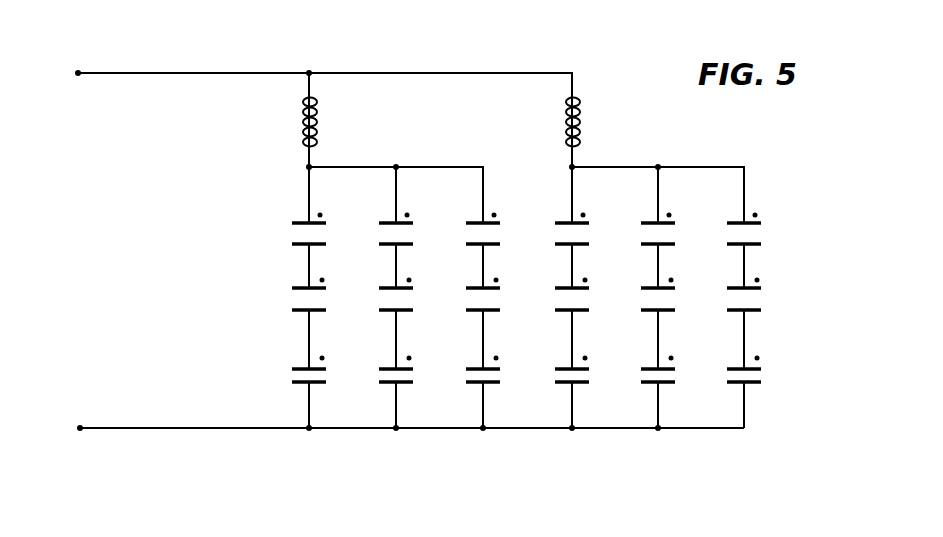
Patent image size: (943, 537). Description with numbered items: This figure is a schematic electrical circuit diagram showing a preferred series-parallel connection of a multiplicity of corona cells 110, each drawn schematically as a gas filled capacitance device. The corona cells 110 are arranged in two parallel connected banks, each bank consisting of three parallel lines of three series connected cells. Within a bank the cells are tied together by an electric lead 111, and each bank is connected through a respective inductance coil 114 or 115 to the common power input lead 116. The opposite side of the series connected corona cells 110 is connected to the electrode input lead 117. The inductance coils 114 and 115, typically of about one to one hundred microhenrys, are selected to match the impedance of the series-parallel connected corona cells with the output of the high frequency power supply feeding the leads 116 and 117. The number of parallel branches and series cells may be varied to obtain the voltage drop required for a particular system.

The corona cells 110 is at (300, 288).
The electric lead 111 is at (422, 167).
The inductance coil 114 is at (318, 126).
The inductance coil 115 is at (580, 118).
The power input lead 116 is at (473, 73).
The electrode input lead 117 is at (465, 428).